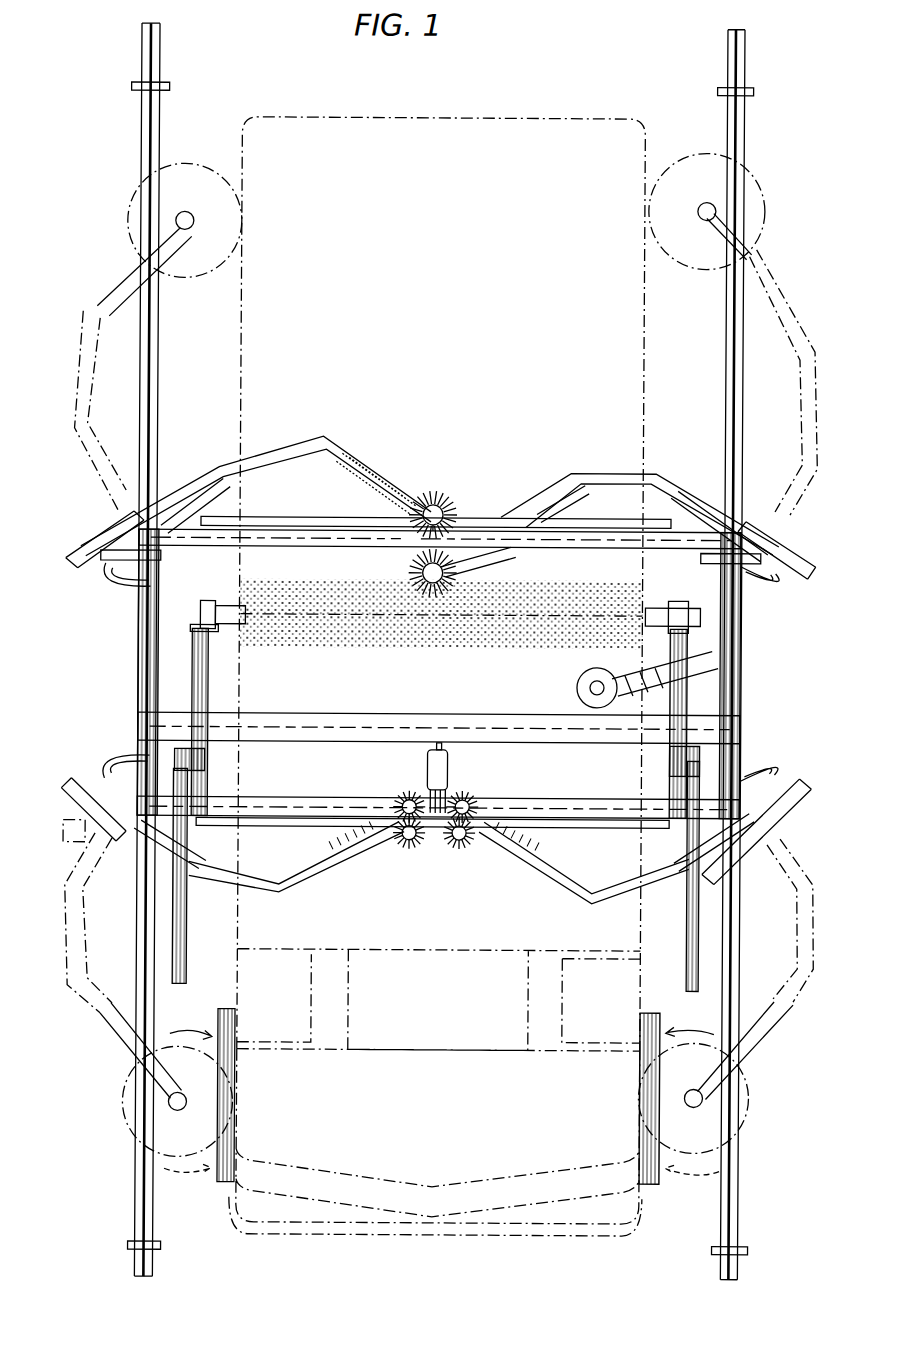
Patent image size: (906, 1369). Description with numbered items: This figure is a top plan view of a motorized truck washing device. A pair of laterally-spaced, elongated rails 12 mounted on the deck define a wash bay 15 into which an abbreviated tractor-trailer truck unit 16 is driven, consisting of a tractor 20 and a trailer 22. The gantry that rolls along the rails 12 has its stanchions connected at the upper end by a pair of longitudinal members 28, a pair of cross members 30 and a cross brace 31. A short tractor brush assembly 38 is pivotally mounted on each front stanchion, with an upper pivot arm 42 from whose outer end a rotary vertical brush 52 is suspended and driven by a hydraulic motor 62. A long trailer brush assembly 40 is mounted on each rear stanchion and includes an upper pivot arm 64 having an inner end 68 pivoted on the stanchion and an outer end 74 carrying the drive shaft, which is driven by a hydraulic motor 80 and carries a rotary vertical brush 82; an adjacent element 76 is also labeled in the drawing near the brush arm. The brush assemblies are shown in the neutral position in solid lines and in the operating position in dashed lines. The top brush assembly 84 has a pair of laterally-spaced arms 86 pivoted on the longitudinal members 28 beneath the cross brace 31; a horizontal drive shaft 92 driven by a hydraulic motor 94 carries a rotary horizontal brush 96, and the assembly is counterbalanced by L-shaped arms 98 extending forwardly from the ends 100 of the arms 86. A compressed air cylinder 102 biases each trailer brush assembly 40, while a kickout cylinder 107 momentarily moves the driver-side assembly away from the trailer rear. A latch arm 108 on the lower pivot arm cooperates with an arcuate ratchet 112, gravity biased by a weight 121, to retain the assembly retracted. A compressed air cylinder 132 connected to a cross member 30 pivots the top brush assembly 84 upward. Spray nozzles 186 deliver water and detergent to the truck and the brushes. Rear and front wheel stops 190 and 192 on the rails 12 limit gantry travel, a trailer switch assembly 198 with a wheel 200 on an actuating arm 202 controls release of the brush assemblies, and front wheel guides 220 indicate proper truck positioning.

The rails 12 is at (138, 145).
The wash bay 15 is at (174, 380).
The tractor-trailer truck unit 16 is at (277, 116).
The tractor 20 is at (368, 1195).
The trailer 22 is at (513, 118).
The longitudinal members 28 is at (150, 667).
The cross members 30 is at (342, 548).
The cross brace 31 is at (340, 714).
The tractor brush assembly 38 is at (335, 885).
The trailer brush assembly 40 is at (370, 452).
The upper pivot arm 42 is at (380, 846).
The rotary vertical brush 52 is at (402, 800).
The hydraulic motor 62 is at (472, 798).
The upper pivot arm 64 is at (292, 447).
The inner end 68 is at (192, 470).
The outer ends 74 is at (386, 487).
The brush support arm 76 is at (500, 560).
The hydraulic motor 80 is at (412, 573).
The rotary vertical brush 82 is at (125, 208).
The top brush assembly 84 is at (164, 697).
The arms 86 is at (200, 632).
The horizontal drive shaft 92 is at (440, 636).
The hydraulic motor 94 is at (680, 607).
The rotary horizontal brush 96 is at (615, 596).
The L-shaped arms 98 is at (188, 953).
The ends 100 is at (208, 762).
The compressed air cylinder 102 is at (225, 505).
The kickout cylinder 107 is at (560, 513).
The latch arm 108 is at (90, 535).
The arcuate ratchet 112 is at (130, 586).
The weight 121 is at (115, 565).
The compressed air cylinder 132 is at (428, 767).
The spray nozzles 186 is at (325, 518).
The rear wheel stop 190 is at (128, 90).
The front wheel stop 192 is at (164, 1248).
The trailer switch assembly 198 is at (738, 641).
The wheel 200 is at (716, 665).
The actuating arm 202 is at (576, 688).
The front wheel guides 220 is at (224, 1178).